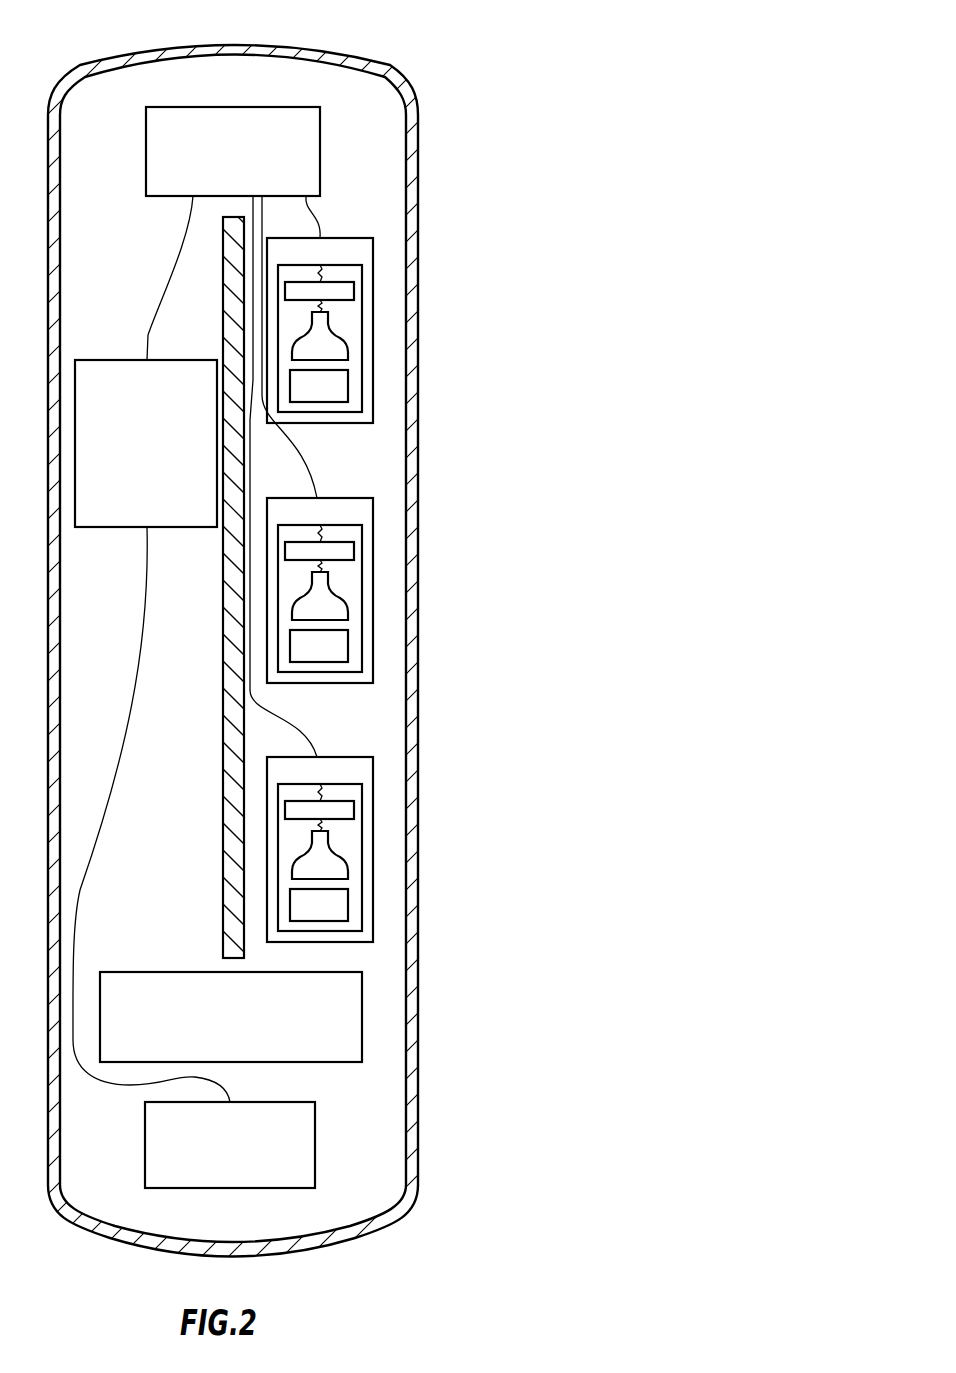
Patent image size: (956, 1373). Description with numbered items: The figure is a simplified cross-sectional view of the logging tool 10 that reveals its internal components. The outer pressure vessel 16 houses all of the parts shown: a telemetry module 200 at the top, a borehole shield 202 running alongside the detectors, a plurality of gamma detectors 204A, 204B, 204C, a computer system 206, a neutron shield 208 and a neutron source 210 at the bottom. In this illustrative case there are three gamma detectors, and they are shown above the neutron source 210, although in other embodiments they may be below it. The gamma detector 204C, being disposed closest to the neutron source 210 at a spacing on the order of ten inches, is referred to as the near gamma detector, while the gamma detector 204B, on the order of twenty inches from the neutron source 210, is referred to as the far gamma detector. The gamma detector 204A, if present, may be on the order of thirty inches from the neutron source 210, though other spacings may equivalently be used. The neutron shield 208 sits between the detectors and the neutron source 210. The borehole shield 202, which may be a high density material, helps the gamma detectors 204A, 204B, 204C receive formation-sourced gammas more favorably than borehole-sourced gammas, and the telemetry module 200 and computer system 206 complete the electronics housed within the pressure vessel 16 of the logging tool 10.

The logging tool 10 is at (545, 80).
The pressure vessel 16 is at (419, 245).
The telemetry module 200 is at (167, 197).
The borehole shield 202 is at (222, 338).
The gamma detector 204A is at (373, 331).
The far gamma detector 204B is at (372, 586).
The near gamma detector 204C is at (372, 843).
The computer system 206 is at (168, 488).
The neutron shield 208 is at (362, 998).
The neutron source 210 is at (315, 1136).